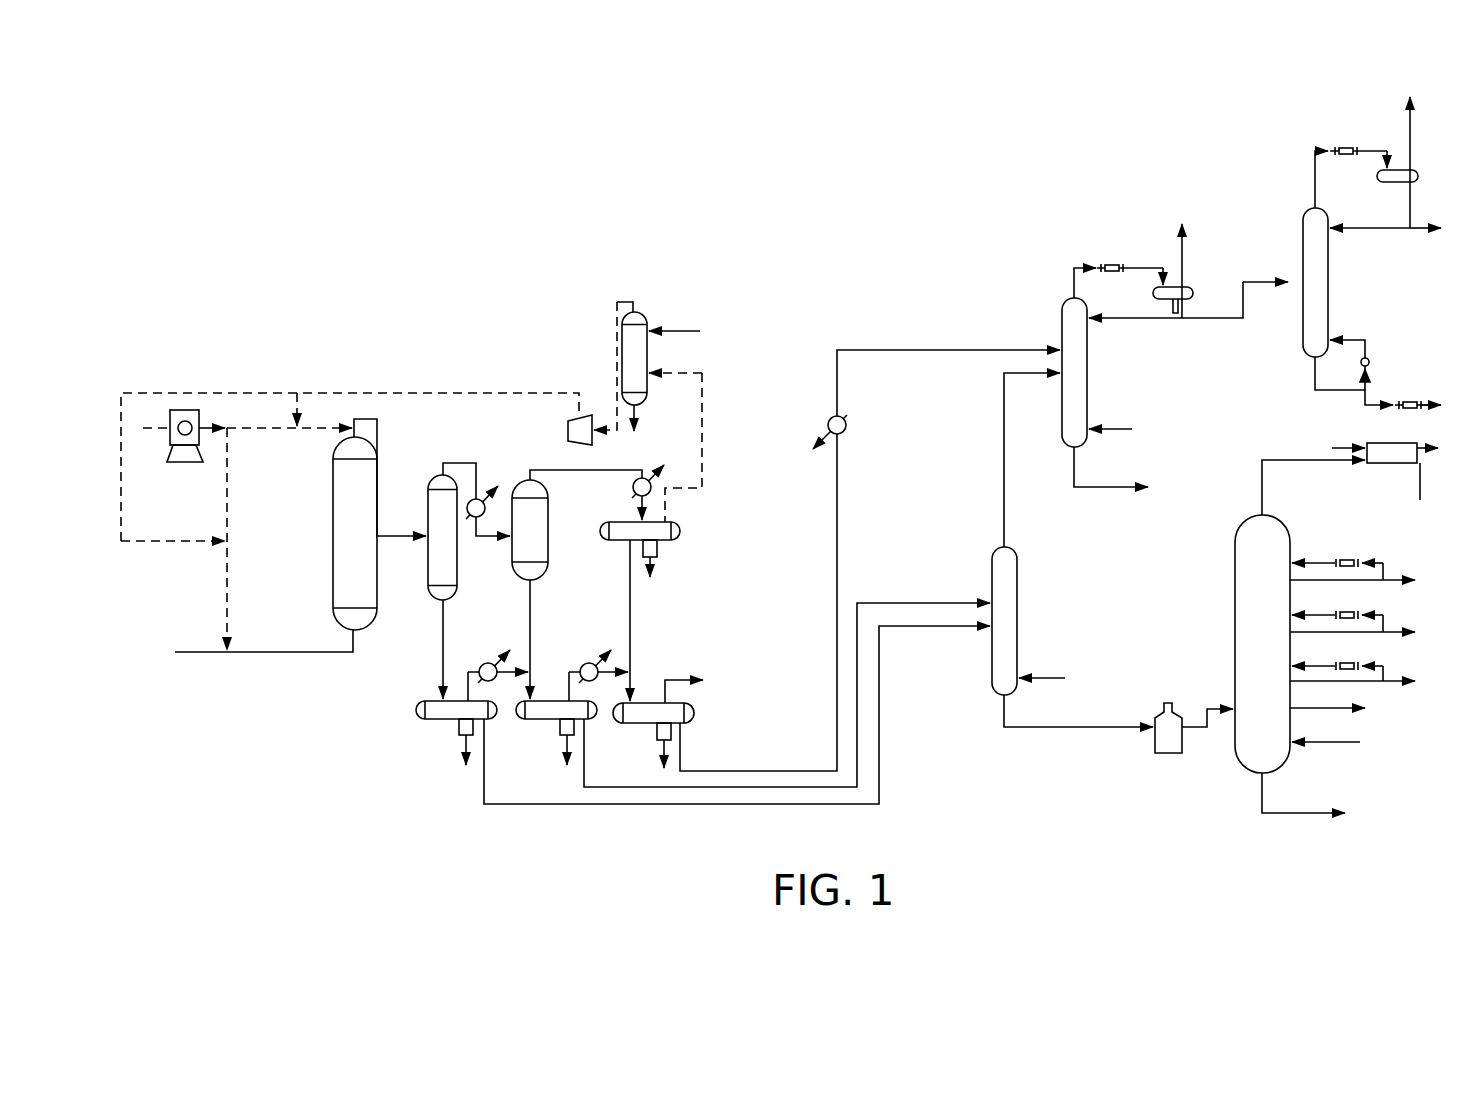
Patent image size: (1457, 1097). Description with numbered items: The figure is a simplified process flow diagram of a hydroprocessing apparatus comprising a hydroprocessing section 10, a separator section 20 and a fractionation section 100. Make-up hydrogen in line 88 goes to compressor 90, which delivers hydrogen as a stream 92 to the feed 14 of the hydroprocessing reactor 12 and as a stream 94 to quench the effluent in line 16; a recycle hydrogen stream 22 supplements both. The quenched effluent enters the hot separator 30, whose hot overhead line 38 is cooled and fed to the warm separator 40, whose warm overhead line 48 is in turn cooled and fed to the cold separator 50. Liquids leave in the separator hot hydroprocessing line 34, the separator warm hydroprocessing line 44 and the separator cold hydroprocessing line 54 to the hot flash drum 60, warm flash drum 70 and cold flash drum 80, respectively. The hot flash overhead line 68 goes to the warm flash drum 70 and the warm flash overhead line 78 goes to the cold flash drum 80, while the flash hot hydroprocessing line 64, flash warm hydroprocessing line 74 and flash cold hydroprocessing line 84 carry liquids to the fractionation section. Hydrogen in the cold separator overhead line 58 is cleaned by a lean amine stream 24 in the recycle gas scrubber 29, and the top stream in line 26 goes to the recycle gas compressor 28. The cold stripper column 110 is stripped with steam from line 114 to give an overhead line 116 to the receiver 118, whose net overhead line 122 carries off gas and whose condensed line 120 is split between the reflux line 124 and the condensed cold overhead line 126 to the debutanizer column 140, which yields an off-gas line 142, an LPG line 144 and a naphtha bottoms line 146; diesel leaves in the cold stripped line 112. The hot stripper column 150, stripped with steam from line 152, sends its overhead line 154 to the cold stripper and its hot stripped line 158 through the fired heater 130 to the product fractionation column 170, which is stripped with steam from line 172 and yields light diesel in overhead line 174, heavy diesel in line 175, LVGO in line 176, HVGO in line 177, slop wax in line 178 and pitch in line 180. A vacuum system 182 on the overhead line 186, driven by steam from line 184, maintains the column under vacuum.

The hydroprocessing section 10 is at (320, 318).
The fractionation section 100 is at (950, 213).
The hydroprocessing reactor 12 is at (333, 567).
The feed 14 is at (193, 652).
The hydroprocessing effluent line 16 is at (378, 427).
The separator section 20 is at (745, 560).
The recycle hydrogen stream 22 is at (383, 393).
The lean amine stream 24 is at (700, 331).
The top stream line 26 is at (617, 313).
The recycle gas compressor 28 is at (568, 430).
The recycle gas scrubber 29 is at (647, 313).
The hot separator 30 is at (448, 600).
The separator hot hydroprocessing line 34 is at (443, 645).
The hot overhead line 38 is at (477, 476).
The warm separator 40 is at (548, 557).
The separator warm hydroprocessing line 44 is at (530, 607).
The warm overhead line 48 is at (580, 470).
The cold separator 50 is at (620, 545).
The separator cold hydroprocessing line 54 is at (630, 617).
The cold separator overhead line 58 is at (702, 440).
The hot flash drum 60 is at (445, 723).
The flash hot hydroprocessing line 64 is at (505, 804).
The hot flash overhead line 68 is at (468, 665).
The warm flash drum 70 is at (557, 701).
The flash warm hydroprocessing line 74 is at (608, 787).
The warm flash overhead line 78 is at (569, 665).
The cold flash drum 80 is at (660, 703).
The flash cold hydroprocessing line 84 is at (720, 771).
The make-up hydrogen line / cold flash overhead line 88 is at (170, 438).
The compressor 90 is at (196, 465).
The hydrogen stream to feed 92 is at (226, 522).
The quench hydrogen stream 94 is at (255, 428).
The cold stripper column 110 is at (1089, 372).
The cold stripped line 112 is at (1105, 487).
The cold stripping media line 114 is at (1120, 429).
The overhead line 116 is at (1074, 275).
The receiver 118 is at (1195, 290).
The condensed line 120 is at (1190, 312).
The net overhead line 122 is at (1182, 245).
The reflux line 124 is at (1158, 318).
The condensed cold overhead line 126 is at (1243, 330).
The fired heater 130 is at (1163, 753).
The debutanizer column 140 is at (1328, 282).
The net off-gas line 142 is at (1410, 125).
The net LPG line 144 is at (1420, 232).
The debutanizer bottoms line 146 is at (1425, 405).
The hot stripper column 150 is at (1017, 580).
The hot stripping media line 152 is at (1048, 678).
The hot stripper overhead line 154 is at (1004, 465).
The hot stripped line 158 is at (1060, 727).
The product fractionation column 170 is at (1235, 643).
The stripping steam line 172 is at (1340, 742).
The overhead light diesel line 174 is at (1423, 494).
The heavy diesel line 175 is at (1392, 576).
The light vacuum gas oil line 176 is at (1390, 630).
The heavy vacuum gas oil line 177 is at (1400, 680).
The slop wax line 178 is at (1327, 710).
The bottoms pitch line 180 is at (1295, 813).
The vacuum system 182 is at (1375, 465).
The steam line 184 is at (1340, 448).
The overhead line 186 is at (1262, 468).